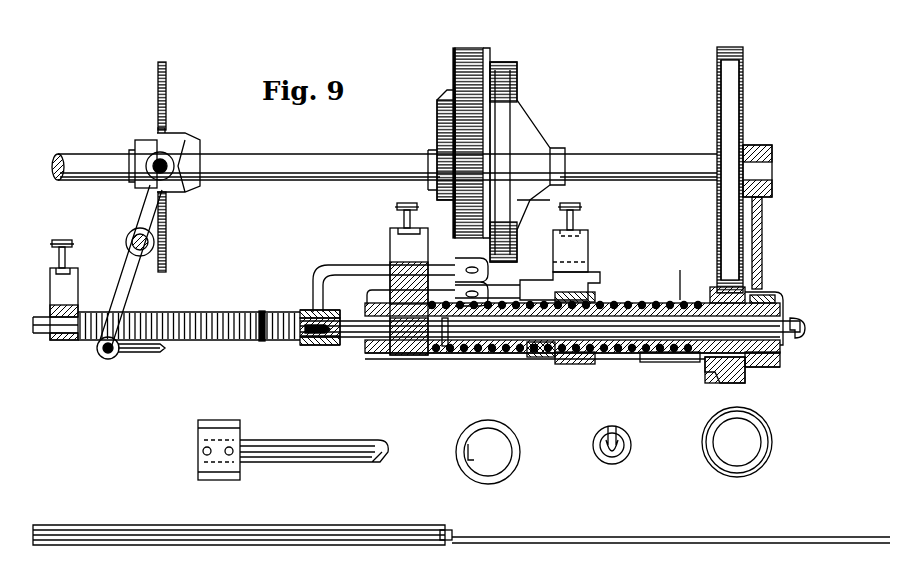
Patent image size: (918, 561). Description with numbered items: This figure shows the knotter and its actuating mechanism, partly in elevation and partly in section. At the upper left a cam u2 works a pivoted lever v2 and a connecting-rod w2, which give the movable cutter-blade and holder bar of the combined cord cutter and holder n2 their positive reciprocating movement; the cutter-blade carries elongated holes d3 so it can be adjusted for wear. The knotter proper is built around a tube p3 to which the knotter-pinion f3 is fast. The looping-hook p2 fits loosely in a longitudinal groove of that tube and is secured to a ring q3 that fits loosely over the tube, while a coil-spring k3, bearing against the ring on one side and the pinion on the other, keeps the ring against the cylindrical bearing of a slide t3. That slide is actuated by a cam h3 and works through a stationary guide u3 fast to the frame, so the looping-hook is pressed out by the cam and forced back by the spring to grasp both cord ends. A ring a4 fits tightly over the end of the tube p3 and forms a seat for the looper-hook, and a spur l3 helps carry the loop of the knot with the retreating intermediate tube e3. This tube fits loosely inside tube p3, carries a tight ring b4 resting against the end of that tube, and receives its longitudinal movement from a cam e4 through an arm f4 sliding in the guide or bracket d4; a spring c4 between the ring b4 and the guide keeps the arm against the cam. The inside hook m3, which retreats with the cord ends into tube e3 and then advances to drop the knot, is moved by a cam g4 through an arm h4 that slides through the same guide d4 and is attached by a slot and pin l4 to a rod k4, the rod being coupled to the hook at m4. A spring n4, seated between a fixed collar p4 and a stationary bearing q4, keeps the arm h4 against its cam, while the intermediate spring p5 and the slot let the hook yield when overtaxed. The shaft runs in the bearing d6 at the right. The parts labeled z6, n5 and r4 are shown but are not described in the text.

The main shaft z6 is at (350, 165).
The cam u2 is at (172, 140).
The pivoted lever v2 is at (129, 272).
The connecting-rod w2 is at (145, 353).
The stationary bearing q4 is at (53, 290).
The spring n4 is at (189, 314).
The fixed collar p4 is at (263, 310).
The intermediate spring p5 is at (300, 318).
The arm h4 is at (400, 278).
The guide or bracket d4 is at (417, 279).
The rod k4 is at (406, 421).
The slot and pin l4 is at (330, 334).
The coupling m4 is at (445, 346).
The arm f4 is at (488, 295).
The coil-spring k3 is at (565, 292).
The spring c4 is at (562, 357).
The tight ring b4 is at (541, 359).
The sleeve r4 is at (572, 364).
The ring q3 is at (449, 418).
The cam e4 is at (471, 132).
The cam h3 is at (527, 162).
The cam g4 is at (431, 145).
The gear n5 is at (730, 170).
The bearing d6 is at (760, 206).
The stationary guide u3 is at (582, 237).
The slide t3 is at (560, 287).
The tube p3 is at (689, 274).
The ring a4 is at (760, 292).
The spur l3 is at (795, 318).
The combined cord cutter and holder n2 is at (802, 321).
The looping-hook p2 is at (780, 360).
The knotter-pinion f3 is at (720, 378).
The intermediate tube e3 is at (621, 445).
The elongated holes d3 is at (737, 442).
The inside hook m3 is at (671, 525).